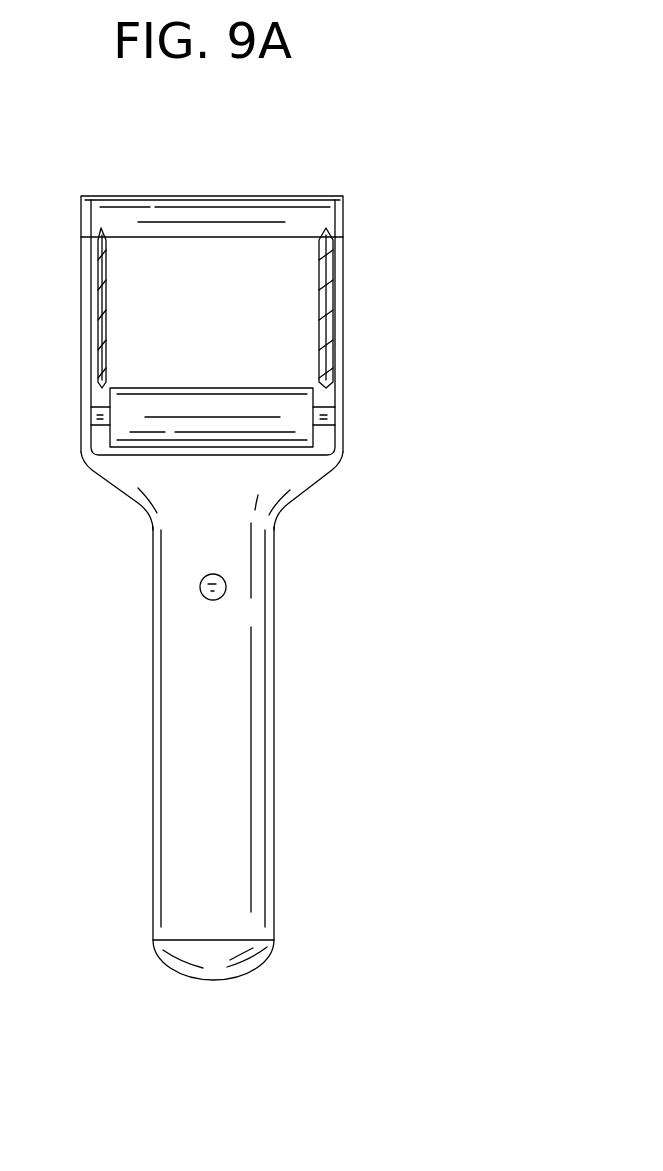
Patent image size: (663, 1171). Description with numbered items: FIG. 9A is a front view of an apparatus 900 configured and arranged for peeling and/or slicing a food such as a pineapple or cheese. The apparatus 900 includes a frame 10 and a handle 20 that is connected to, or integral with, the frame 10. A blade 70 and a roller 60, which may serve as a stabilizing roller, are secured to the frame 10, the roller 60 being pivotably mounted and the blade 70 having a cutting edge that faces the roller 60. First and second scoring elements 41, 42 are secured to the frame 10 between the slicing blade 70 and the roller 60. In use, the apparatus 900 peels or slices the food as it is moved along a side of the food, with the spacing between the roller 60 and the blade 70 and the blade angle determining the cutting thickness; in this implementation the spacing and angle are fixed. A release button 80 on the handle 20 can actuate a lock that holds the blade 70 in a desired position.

The apparatus 900 is at (410, 137).
The frame 10 is at (322, 436).
The handle 20 is at (258, 783).
The first scoring element 41 is at (95, 270).
The second scoring element 42 is at (334, 253).
The roller 60 is at (268, 398).
The blade 70 is at (250, 207).
The release button 80 is at (226, 584).